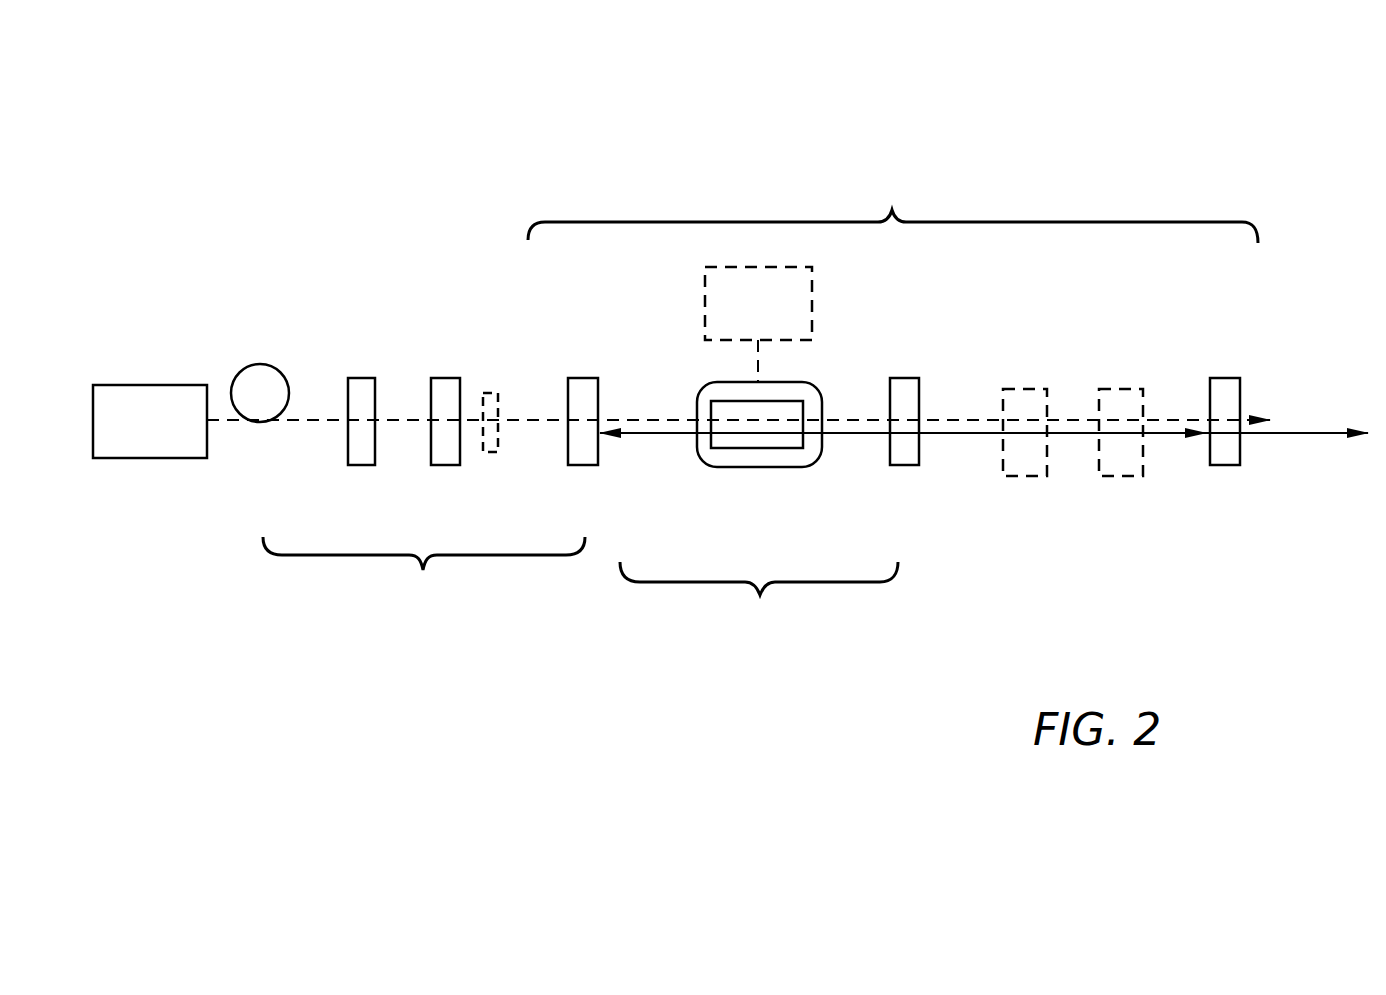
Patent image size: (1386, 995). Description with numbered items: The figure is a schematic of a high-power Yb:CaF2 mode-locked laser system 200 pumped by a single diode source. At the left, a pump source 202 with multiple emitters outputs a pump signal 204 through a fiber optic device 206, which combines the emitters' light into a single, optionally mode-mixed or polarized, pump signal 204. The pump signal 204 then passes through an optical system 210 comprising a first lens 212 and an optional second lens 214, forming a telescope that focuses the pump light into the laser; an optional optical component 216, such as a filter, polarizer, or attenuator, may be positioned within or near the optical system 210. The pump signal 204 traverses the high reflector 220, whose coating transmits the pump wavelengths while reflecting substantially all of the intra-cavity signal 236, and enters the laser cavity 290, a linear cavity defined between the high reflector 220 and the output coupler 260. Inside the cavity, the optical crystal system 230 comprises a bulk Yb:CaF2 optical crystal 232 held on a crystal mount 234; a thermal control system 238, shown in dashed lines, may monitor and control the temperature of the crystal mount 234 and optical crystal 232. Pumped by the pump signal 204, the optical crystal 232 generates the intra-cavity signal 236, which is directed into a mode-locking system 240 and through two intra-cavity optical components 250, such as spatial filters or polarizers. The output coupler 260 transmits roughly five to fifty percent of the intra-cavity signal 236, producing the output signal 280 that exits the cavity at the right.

The laser system 200 is at (1222, 168).
The pump source 202 is at (170, 436).
The pump signal 204 is at (316, 420).
The fiber optic device 206 is at (256, 366).
The optical system 210 is at (430, 473).
The first lens 212 is at (356, 455).
The second lens 214 is at (447, 456).
The optional optical component 216 is at (492, 453).
The high reflector 220 is at (584, 396).
The optical crystal system 230 is at (759, 447).
The optical crystal 232 is at (742, 449).
The crystal mount 234 is at (778, 468).
The intra-cavity signal 236 is at (958, 435).
The thermal control system 238 is at (779, 319).
The mode-locking system 240 is at (904, 390).
The intra-cavity optical component 250 is at (1025, 405).
The output coupler 260 is at (1223, 390).
The output signal 280 is at (1315, 436).
The laser cavity 290 is at (893, 405).